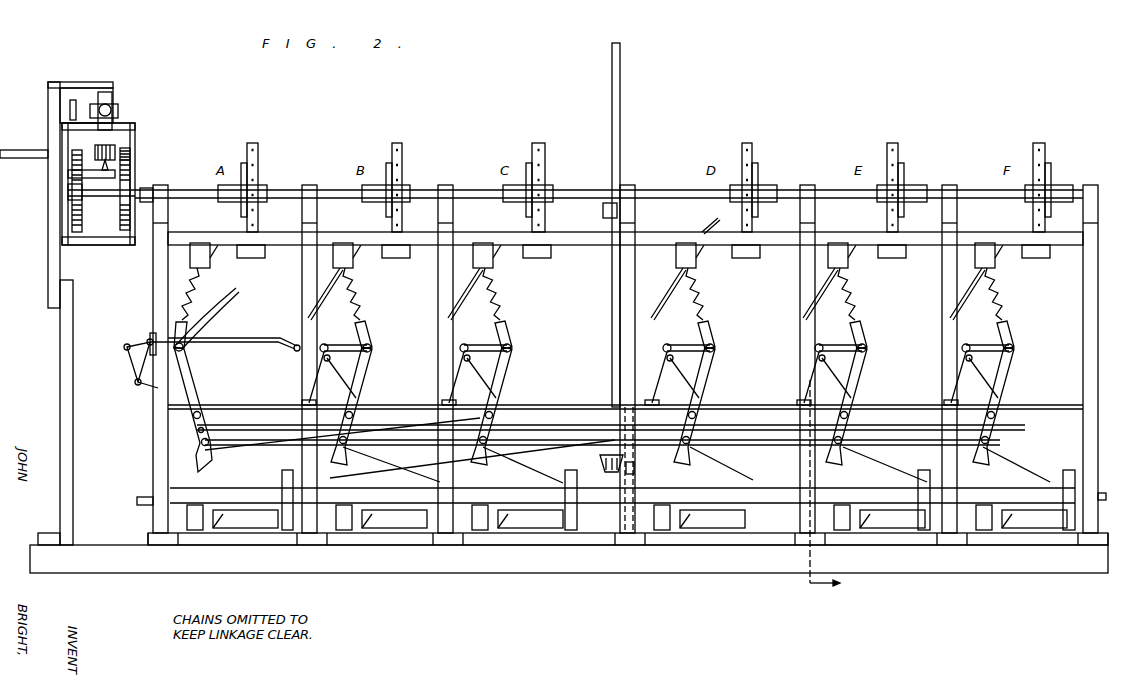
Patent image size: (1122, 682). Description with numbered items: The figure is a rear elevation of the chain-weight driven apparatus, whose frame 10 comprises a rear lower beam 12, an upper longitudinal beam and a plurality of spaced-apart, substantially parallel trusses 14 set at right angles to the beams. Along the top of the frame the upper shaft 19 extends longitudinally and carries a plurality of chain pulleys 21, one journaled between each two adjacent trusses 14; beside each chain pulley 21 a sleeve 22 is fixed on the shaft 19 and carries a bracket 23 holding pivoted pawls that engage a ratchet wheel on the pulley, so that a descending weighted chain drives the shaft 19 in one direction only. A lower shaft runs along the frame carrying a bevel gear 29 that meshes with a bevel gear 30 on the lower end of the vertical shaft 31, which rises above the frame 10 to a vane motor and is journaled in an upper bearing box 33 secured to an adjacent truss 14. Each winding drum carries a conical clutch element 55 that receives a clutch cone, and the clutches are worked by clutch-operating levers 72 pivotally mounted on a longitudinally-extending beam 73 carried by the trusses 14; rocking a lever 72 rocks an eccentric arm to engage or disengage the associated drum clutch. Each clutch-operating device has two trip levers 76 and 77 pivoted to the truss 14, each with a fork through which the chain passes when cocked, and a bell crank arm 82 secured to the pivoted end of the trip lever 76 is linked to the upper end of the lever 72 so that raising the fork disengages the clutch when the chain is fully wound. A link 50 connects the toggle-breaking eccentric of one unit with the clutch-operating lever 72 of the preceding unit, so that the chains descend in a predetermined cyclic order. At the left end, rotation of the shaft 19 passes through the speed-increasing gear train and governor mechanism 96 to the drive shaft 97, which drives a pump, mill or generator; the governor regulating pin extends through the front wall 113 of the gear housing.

The frame 10 is at (515, 573).
The lower beam 12 is at (665, 573).
The truss 14 is at (800, 297).
The upper shaft 19 is at (340, 185).
The chain pulley 21 is at (392, 151).
The sleeve 22 is at (503, 188).
The bracket 23 is at (492, 232).
The bevel gear 29 is at (634, 466).
The bevel gear 30 is at (600, 465).
The vertical shaft 31 is at (612, 150).
The upper bearing box 33 is at (603, 210).
The link 50 is at (915, 410).
The conical clutch element 55 is at (508, 520).
The clutch-operating lever 72 is at (177, 378).
The beam 73 is at (592, 405).
The trip lever 76 is at (258, 340).
The trip lever 77 is at (218, 311).
The bell crank arm 82 is at (135, 365).
The speed-increasing gear train and governor mechanism 96 is at (72, 82).
The drive shaft 97 is at (21, 152).
The front wall 113 is at (45, 245).